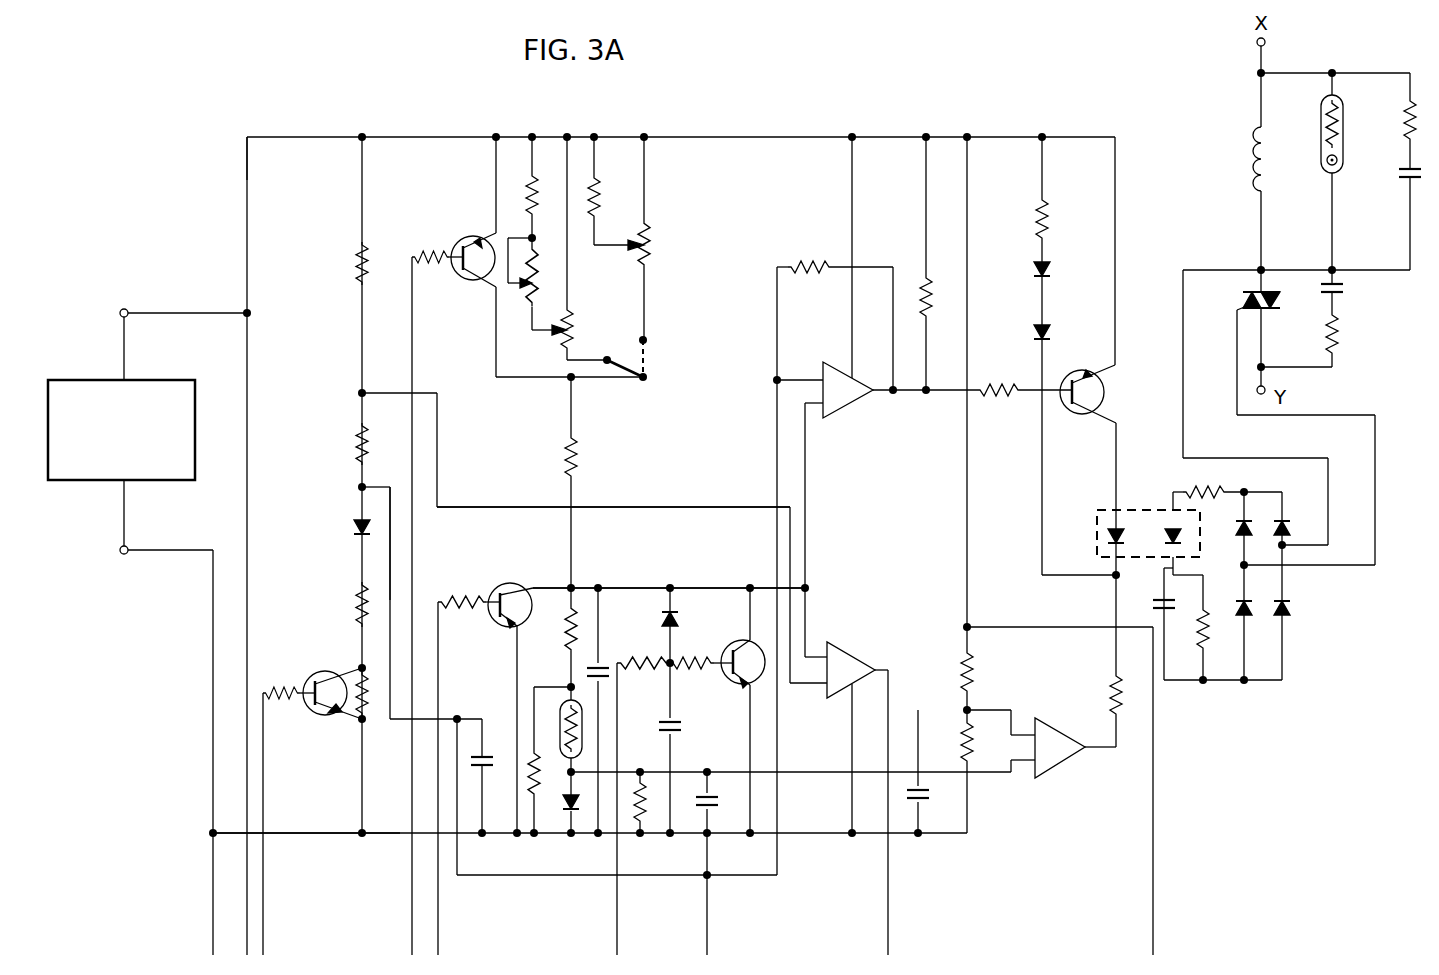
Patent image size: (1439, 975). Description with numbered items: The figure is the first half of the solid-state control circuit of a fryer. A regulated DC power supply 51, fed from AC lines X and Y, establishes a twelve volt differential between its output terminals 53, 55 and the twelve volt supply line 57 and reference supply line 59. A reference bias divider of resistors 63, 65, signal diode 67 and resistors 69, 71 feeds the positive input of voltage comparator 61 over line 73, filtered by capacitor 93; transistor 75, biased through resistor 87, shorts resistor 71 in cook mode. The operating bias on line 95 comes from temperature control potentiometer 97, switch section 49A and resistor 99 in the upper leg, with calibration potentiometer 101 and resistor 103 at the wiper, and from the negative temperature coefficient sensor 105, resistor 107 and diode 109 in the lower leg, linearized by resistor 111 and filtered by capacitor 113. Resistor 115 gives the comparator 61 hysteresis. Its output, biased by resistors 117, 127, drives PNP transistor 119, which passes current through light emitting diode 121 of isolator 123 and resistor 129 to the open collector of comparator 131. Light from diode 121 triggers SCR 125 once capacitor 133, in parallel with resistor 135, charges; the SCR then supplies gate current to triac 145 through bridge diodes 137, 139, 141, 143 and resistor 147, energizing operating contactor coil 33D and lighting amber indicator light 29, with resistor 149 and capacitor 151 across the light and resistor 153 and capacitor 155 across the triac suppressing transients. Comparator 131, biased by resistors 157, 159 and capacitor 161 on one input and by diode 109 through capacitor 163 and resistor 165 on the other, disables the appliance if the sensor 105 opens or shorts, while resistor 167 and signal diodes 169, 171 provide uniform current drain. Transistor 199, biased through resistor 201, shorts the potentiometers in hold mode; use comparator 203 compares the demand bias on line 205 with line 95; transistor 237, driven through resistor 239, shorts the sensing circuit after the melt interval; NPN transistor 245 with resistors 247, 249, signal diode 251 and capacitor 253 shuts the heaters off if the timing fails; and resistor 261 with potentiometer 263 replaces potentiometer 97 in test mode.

The DC power supply 51 is at (180, 380).
The output terminal 53 is at (125, 305).
The output terminal 55 is at (124, 555).
The 12 volt DC power supply line 57 is at (305, 138).
The reference power supply line 59 is at (213, 770).
The resistor 63 is at (358, 258).
The resistor 65 is at (358, 447).
The signal diode 67 is at (352, 530).
The resistor 69 is at (358, 600).
The resistor 71 is at (372, 722).
The line 73 is at (391, 535).
The transistor 75 is at (325, 712).
The resistor 87 is at (290, 682).
The capacitor 93 is at (492, 758).
The operating bias line 95 is at (630, 587).
The temperature control potentiometer 97 is at (572, 338).
The resistor 99 is at (576, 450).
The calibration potentiometer 101 is at (536, 288).
The resistor 103 is at (528, 185).
The negative temperature coefficient resistive sensor 105 is at (560, 712).
The resistor 107 is at (568, 635).
The diode 109 is at (562, 808).
The resistor 111 is at (530, 782).
The capacitor 113 is at (602, 665).
The resistor 115 is at (812, 265).
The resistor 117 is at (992, 385).
The PNP transistor 119 is at (1105, 395).
The light emitting diode 121 is at (1110, 536).
The isolator 123 is at (1128, 510).
The silicon-controlled rectifier 125 is at (1166, 532).
The resistor 127 is at (922, 290).
The resistor 129 is at (1112, 695).
The comparator 131 is at (1065, 758).
The capacitor 133 is at (1150, 602).
The resistor 135 is at (1208, 628).
The diode 137 is at (1286, 522).
The diode 139 is at (1250, 608).
The diode 141 is at (1290, 606).
The diode 143 is at (1238, 530).
The triac 145 is at (1272, 310).
The resistor 147 is at (1212, 492).
The resistor 149 is at (1406, 110).
The capacitor 151 is at (1402, 175).
The resistor 153 is at (1340, 330).
The capacitor 155 is at (1345, 290).
The resistor 157 is at (972, 668).
The resistor 159 is at (978, 755).
The capacitor 161 is at (925, 800).
The capacitor 163 is at (725, 808).
The resistor 165 is at (645, 815).
The resistor 167 is at (1046, 222).
The signal diode 169 is at (1050, 270).
The signal diode 171 is at (1050, 336).
The transistor 199 is at (462, 240).
The resistor 201 is at (425, 262).
The use comparator 203 is at (868, 658).
The line 205 is at (690, 507).
The transistor 237 is at (505, 585).
The resistor 239 is at (465, 608).
The NPN transistor 245 is at (737, 676).
The resistor 247 is at (698, 660).
The resistor 249 is at (645, 667).
The signal diode 251 is at (680, 618).
The capacitor 253 is at (685, 724).
The resistor 261 is at (602, 200).
The potentiometer 263 is at (648, 245).
The amber indicator light 29 is at (1322, 122).
The operating contactor coil 33D is at (1252, 148).
The switch section 49A is at (660, 355).
The voltage comparator 61 is at (828, 363).